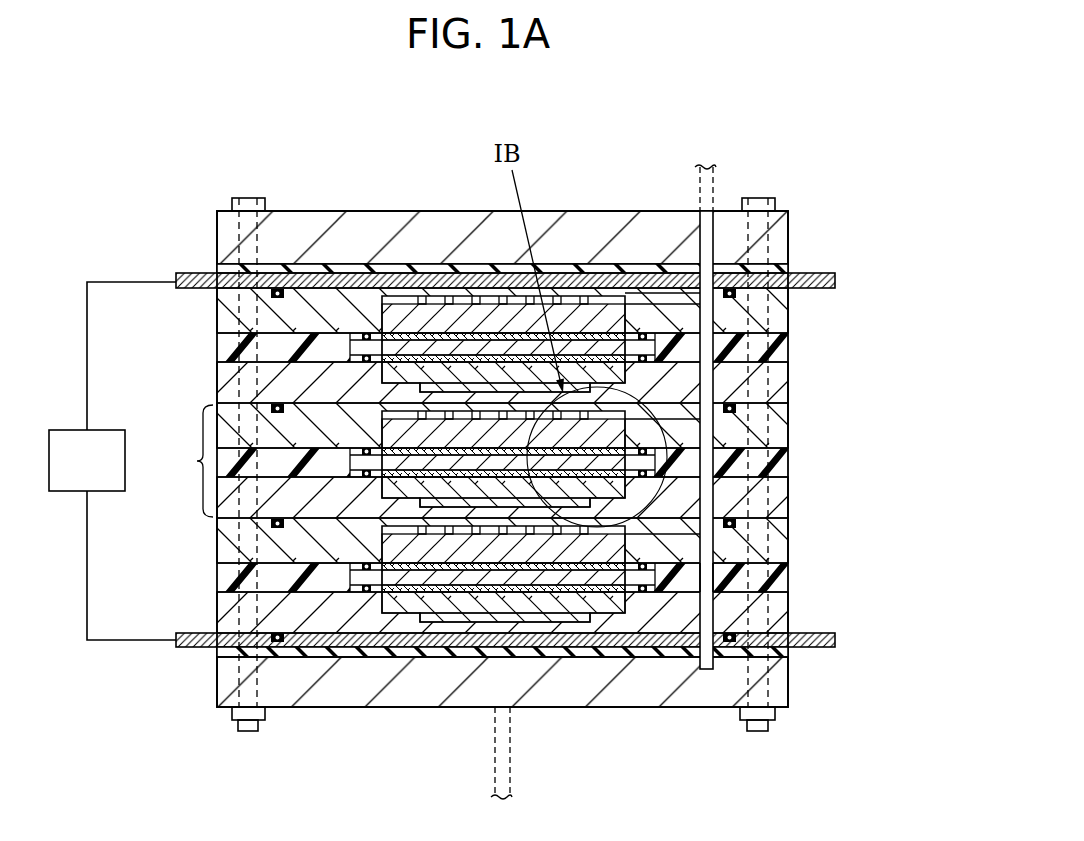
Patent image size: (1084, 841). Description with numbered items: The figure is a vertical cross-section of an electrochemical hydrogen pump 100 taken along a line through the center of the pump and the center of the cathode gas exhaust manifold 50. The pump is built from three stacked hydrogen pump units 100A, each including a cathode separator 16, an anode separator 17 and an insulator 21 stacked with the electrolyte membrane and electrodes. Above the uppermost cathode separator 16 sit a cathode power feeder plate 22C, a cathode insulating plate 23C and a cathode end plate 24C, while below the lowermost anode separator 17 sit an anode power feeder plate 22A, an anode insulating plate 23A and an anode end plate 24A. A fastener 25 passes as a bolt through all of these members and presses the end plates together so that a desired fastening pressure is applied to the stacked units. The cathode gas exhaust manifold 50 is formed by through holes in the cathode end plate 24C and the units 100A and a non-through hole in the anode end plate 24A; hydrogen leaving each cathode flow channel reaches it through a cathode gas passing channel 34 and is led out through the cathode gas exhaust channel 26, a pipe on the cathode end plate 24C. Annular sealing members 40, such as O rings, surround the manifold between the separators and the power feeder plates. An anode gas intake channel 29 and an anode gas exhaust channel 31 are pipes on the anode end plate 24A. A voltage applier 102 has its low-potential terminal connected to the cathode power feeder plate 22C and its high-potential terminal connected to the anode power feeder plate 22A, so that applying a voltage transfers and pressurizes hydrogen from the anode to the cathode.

The electrochemical hydrogen pump 100 is at (350, 109).
The voltage applier 102 is at (66, 476).
The hydrogen pump unit 100A is at (172, 461).
The fastener 25 is at (248, 198).
The cathode gas exhaust channel 26 is at (703, 192).
The cathode end plate 24C is at (790, 222).
The cathode insulating plate 23C is at (790, 270).
The cathode power feeder plate 22C is at (836, 283).
The cathode gas passing channel 34 is at (667, 293).
The annular sealing member 40 is at (738, 394).
The cathode separator 16 is at (783, 428).
The insulator 21 is at (782, 478).
The anode separator 17 is at (783, 510).
The cathode gas exhaust manifold 50 is at (706, 578).
The anode power feeder plate 22A is at (835, 637).
The anode insulating plate 23A is at (790, 655).
The anode end plate 24A is at (790, 680).
The anode gas intake channel 29 is at (564, 754).
The anode gas exhaust channel 31 is at (503, 759).